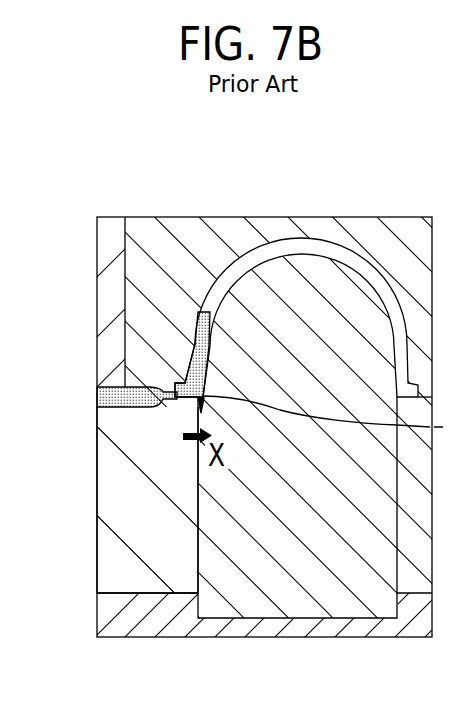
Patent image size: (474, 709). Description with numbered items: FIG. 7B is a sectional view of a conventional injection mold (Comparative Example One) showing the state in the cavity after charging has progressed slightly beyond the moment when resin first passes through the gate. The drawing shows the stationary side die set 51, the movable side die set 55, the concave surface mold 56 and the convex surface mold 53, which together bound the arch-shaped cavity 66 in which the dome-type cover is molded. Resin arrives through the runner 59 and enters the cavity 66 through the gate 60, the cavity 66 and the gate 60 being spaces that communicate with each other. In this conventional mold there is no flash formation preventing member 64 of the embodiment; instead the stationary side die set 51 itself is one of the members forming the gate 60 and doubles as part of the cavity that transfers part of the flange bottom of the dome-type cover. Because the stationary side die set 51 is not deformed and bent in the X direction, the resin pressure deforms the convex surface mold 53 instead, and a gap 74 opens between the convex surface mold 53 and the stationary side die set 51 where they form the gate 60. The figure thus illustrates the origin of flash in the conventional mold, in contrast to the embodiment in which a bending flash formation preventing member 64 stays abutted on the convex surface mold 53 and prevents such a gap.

The stationary side die set 51 is at (108, 543).
The convex surface mold 53 is at (280, 580).
The movable side die set 55 is at (108, 292).
The concave surface mold 56 is at (192, 235).
The runner 59 is at (97, 396).
The gate 60 is at (177, 387).
The flash formation preventing member 64 is at (178, 573).
The cavity 66 is at (303, 250).
The gap 74 is at (337, 420).